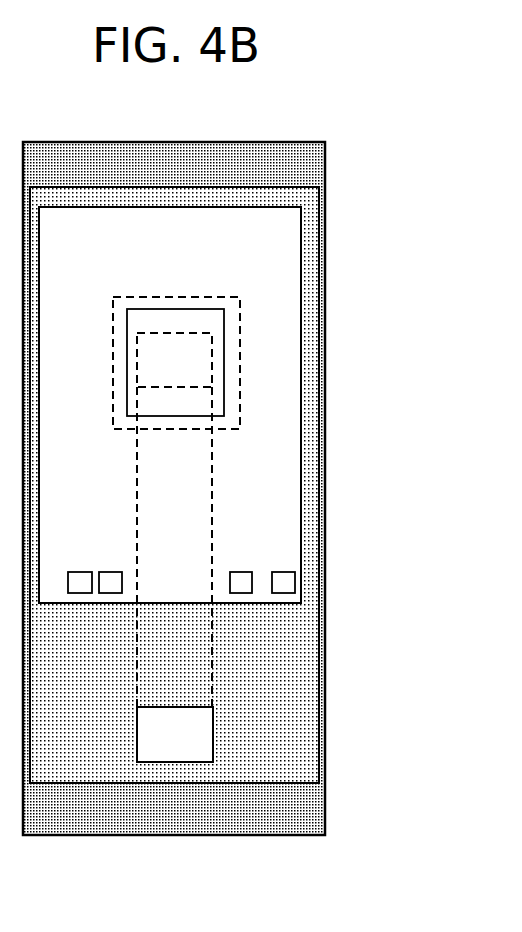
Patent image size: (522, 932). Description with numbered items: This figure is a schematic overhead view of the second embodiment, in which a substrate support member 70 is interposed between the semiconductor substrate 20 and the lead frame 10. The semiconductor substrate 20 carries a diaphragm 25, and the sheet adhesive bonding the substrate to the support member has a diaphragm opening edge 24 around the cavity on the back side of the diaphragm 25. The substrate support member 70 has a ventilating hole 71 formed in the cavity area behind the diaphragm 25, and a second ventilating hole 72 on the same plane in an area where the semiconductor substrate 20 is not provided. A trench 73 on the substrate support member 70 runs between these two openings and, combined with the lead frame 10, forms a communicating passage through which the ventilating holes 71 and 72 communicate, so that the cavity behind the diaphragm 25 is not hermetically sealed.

The lead frame 10 is at (287, 172).
The semiconductor substrate 20 is at (258, 478).
The diaphragm opening edge 24 is at (240, 355).
The diaphragm 25 is at (210, 325).
The substrate support member 70 is at (235, 662).
The ventilating hole 71 is at (200, 355).
The ventilating hole 72 is at (195, 733).
The trench 73 is at (182, 517).